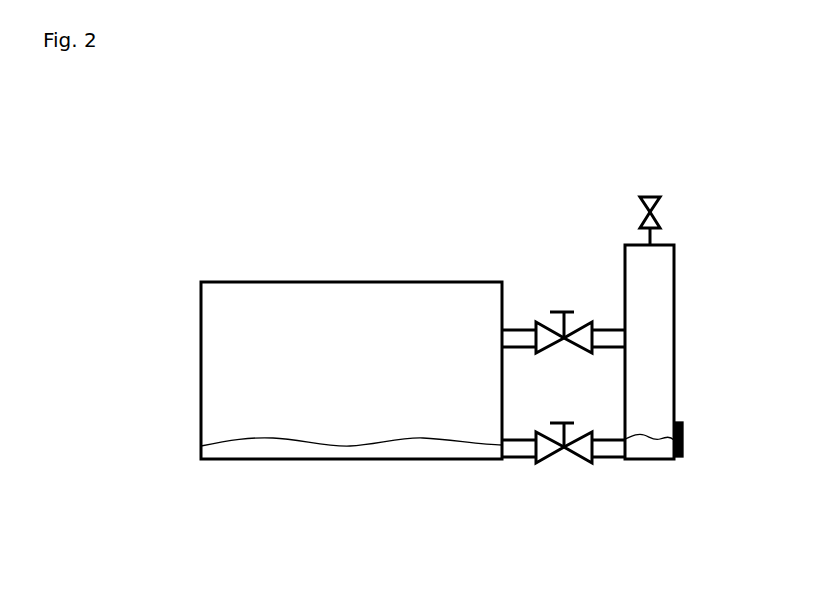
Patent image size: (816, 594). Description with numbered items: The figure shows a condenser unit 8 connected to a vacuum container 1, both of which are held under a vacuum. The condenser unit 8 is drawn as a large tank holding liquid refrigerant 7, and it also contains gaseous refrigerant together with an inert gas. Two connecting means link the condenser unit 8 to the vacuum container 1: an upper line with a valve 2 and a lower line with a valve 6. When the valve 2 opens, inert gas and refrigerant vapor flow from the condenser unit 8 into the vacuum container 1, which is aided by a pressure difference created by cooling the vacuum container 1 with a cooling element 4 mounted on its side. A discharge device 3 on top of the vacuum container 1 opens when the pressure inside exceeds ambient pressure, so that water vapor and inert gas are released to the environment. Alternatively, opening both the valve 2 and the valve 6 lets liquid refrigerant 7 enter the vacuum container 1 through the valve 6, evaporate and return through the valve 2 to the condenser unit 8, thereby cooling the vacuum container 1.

The vacuum container 1 is at (685, 359).
The valve 2 is at (550, 284).
The discharge device 3 is at (616, 202).
The cooling element 4 is at (704, 450).
The valve 6 is at (545, 483).
The liquid refrigerant 7 is at (312, 473).
The condenser unit 8 is at (264, 268).